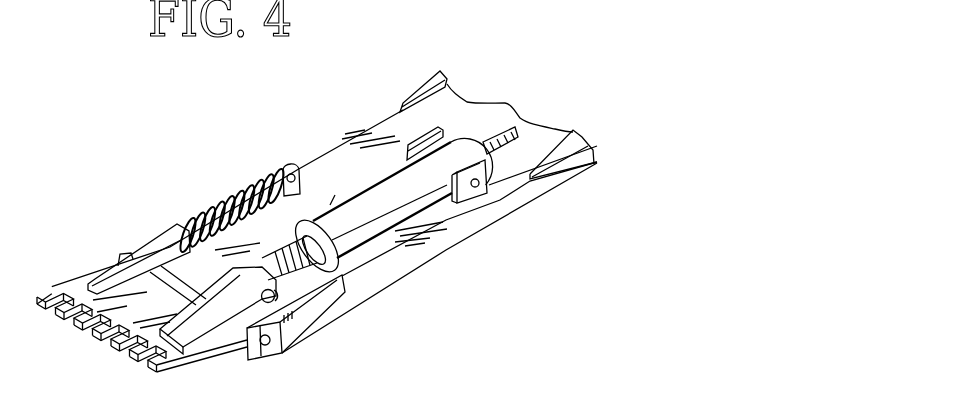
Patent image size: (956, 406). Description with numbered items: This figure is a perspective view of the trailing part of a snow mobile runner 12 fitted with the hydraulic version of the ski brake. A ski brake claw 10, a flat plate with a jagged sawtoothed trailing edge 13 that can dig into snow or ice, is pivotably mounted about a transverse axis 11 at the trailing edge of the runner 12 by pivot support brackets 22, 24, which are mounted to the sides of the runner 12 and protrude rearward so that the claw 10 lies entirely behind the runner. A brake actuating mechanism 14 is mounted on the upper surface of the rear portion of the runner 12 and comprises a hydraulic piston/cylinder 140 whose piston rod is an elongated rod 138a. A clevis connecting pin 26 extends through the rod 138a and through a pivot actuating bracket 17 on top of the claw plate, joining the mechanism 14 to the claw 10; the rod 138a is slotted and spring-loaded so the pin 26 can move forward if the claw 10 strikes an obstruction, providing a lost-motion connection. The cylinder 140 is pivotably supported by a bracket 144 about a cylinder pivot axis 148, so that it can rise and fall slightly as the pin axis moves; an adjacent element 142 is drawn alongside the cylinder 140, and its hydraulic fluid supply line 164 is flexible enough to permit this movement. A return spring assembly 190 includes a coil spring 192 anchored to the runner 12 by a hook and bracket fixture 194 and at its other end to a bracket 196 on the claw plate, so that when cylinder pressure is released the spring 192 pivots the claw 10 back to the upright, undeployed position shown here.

The ski brake claw 10 is at (75, 268).
The transverse axis 11 is at (267, 346).
The runner 12 is at (588, 162).
The sawtoothed trailing edge 13 is at (75, 332).
The brake actuating mechanism 14 is at (380, 152).
The pivot actuating bracket 17 is at (209, 282).
The pivot support bracket 22 is at (143, 246).
The pivot support bracket 24 is at (305, 340).
The clevis connecting pin 26 is at (278, 298).
The elongated rod 138a is at (300, 235).
The hydraulic piston/cylinder 140 is at (443, 202).
The clamp block 142 is at (447, 136).
The bracket 144 is at (524, 209).
The cylinder pivot axis 148 is at (480, 187).
The hydraulic fluid supply line 164 is at (510, 127).
The return spring assembly 190 is at (255, 171).
The coil spring 192 is at (248, 185).
The hook and bracket fixture 194 is at (293, 167).
The bracket 196 is at (127, 252).